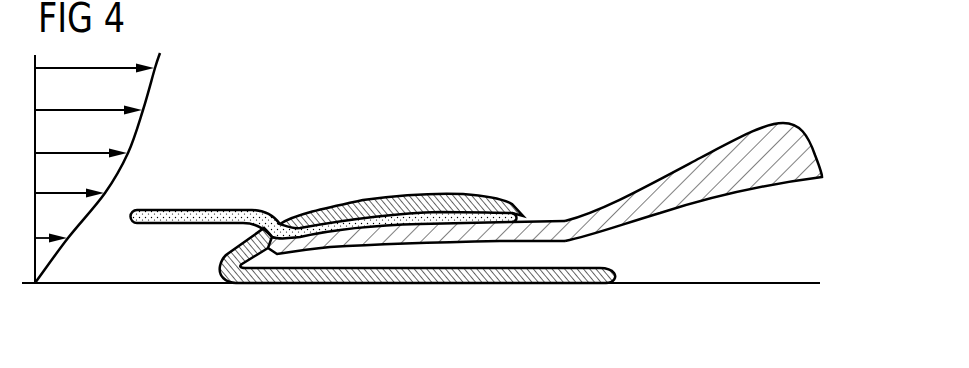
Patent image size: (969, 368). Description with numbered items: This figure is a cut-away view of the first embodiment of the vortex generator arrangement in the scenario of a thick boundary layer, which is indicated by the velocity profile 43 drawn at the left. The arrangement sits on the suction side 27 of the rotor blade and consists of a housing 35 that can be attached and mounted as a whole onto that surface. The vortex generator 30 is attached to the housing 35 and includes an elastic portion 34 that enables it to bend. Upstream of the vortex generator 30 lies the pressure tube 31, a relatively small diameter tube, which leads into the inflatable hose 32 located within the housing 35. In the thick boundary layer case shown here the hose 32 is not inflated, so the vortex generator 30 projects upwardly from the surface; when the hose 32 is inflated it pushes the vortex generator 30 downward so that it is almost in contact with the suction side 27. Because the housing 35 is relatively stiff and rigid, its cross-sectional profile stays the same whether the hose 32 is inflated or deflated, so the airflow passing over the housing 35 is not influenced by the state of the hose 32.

The suction side 27 is at (695, 285).
The vortex generator 30 is at (732, 143).
The pressure tube 31 is at (193, 209).
The hose 32 is at (427, 216).
The elastic portion 34 is at (532, 229).
The housing 35 is at (362, 197).
The velocity profile 43 is at (152, 92).